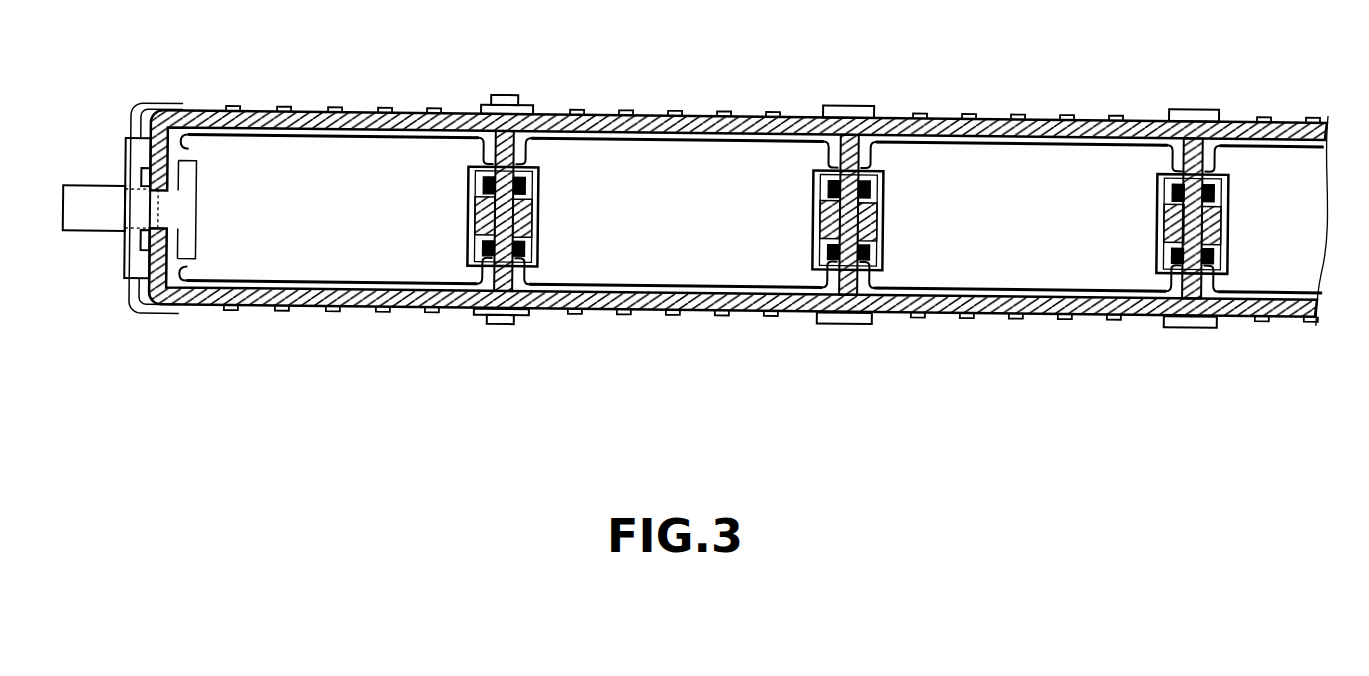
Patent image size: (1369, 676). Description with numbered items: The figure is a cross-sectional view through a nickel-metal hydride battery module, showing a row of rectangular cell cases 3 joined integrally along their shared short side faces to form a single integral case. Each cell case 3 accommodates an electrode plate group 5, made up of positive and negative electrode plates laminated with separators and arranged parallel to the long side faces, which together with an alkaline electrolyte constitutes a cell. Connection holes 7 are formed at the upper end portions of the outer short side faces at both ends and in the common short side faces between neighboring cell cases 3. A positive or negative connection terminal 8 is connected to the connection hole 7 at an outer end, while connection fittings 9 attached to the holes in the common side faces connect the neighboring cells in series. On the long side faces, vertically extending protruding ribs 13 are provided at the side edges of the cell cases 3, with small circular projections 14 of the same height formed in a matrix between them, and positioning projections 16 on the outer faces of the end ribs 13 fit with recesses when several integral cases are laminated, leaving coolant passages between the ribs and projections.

The cell case 3 is at (208, 112).
The electrode plate group 5 is at (308, 272).
The connection hole 7 is at (540, 222).
The connection terminal 8 is at (82, 197).
The connection fitting 9 is at (468, 222).
The protruding rib 13 is at (482, 103).
The circular projection 14 is at (283, 108).
The projection 16 is at (515, 96).